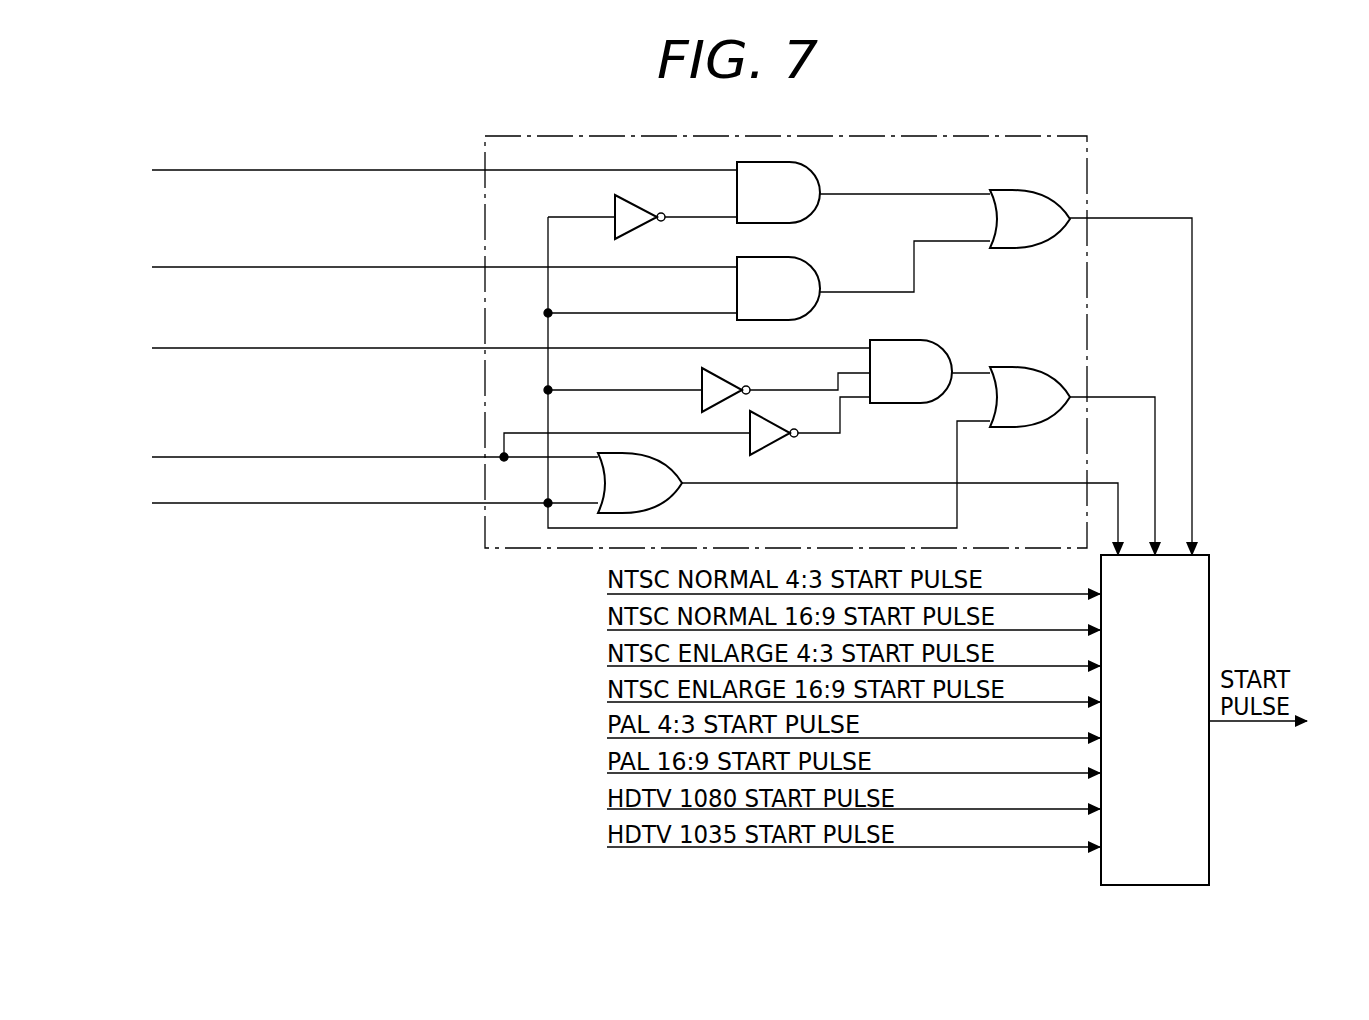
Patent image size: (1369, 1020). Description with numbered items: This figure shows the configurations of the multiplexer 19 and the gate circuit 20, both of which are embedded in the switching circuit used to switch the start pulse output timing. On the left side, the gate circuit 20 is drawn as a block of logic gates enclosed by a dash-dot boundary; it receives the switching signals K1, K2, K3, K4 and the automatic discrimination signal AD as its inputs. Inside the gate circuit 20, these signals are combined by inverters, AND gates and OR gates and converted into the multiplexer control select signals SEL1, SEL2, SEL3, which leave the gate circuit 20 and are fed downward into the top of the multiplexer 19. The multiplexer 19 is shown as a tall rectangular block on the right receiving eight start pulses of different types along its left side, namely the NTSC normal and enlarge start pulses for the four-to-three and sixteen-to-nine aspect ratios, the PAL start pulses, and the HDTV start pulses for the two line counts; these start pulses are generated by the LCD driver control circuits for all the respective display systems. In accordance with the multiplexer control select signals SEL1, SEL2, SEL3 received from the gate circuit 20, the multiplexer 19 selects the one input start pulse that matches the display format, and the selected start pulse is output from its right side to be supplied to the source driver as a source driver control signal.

The multiplexer 19 is at (1209, 608).
The gate circuit 20 is at (841, 331).
The switching signal K1 is at (444, 143).
The switching signal K2 is at (511, 321).
The switching signal K3 is at (375, 533).
The switching signal K4 is at (444, 240).
The automatic discrimination signal AD is at (451, 432).
The multiplexer control select signal SEL1 is at (1134, 373).
The multiplexer control select signal SEL2 is at (1115, 463).
The multiplexer control select signal SEL3 is at (912, 506).